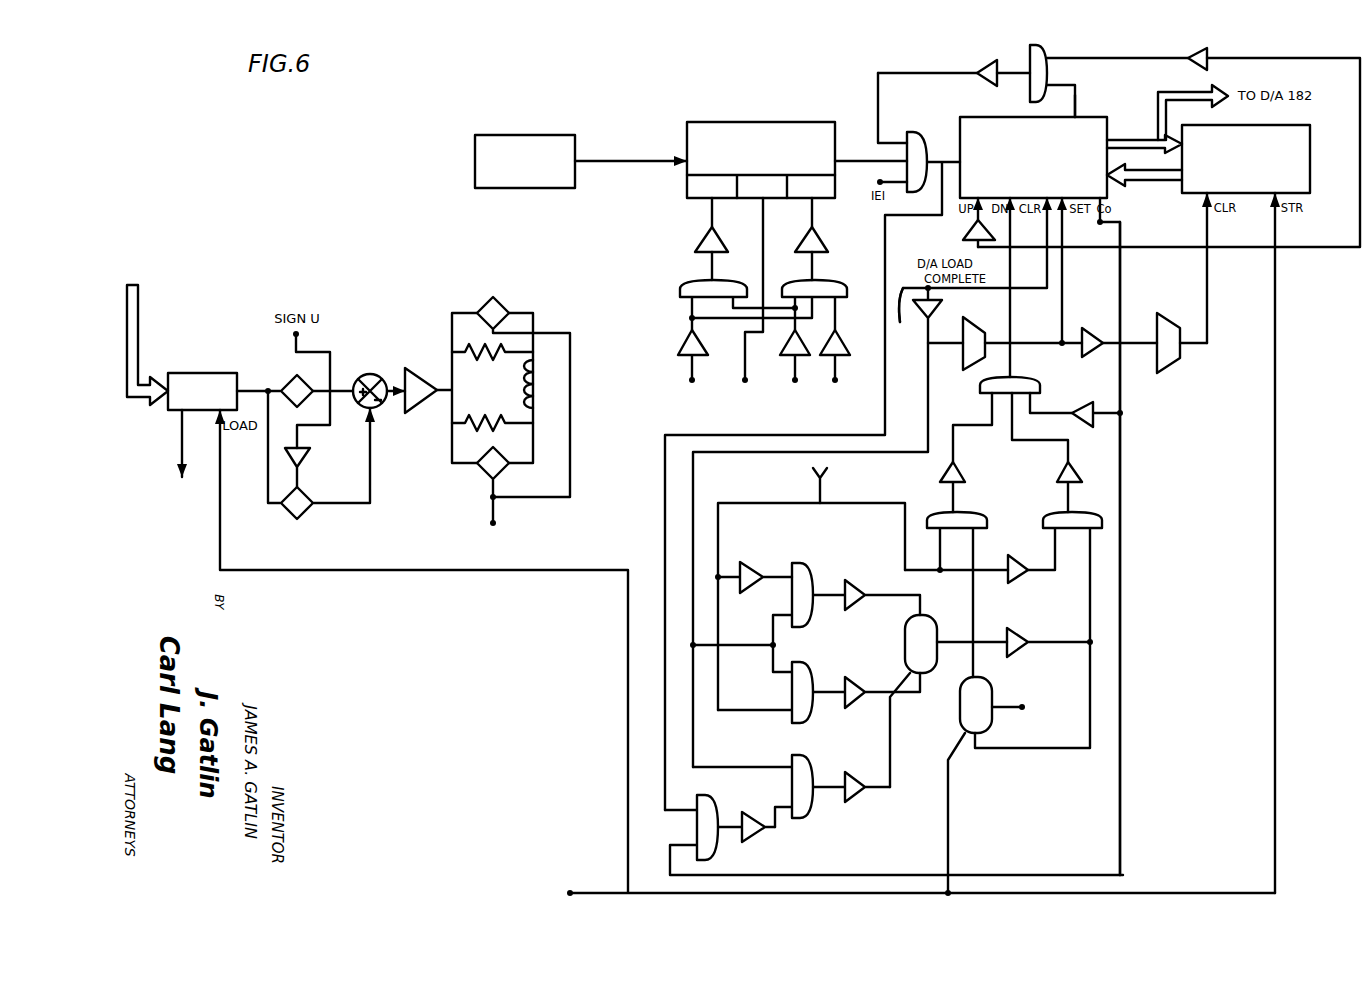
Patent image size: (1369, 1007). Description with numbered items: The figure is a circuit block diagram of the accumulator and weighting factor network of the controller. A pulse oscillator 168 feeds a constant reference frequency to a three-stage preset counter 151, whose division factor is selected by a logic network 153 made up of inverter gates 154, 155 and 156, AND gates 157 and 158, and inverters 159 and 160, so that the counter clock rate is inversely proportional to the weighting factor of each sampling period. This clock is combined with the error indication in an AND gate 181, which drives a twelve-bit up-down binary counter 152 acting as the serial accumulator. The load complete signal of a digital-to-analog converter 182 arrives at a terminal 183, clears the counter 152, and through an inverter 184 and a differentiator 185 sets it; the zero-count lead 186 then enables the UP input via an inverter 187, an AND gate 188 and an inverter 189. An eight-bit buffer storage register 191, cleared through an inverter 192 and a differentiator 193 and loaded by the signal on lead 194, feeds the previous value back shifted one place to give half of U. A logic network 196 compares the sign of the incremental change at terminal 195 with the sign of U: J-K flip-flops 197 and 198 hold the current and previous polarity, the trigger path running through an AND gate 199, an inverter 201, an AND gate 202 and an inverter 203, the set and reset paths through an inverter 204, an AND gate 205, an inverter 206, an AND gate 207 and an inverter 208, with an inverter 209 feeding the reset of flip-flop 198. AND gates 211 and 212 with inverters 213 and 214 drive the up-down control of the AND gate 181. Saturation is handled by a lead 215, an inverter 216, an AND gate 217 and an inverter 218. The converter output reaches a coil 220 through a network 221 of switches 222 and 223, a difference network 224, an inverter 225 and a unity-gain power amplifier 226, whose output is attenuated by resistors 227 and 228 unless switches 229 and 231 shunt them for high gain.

The three-stage preset counter 151 is at (712, 122).
The 12-bit up-down binary counter 152 is at (975, 117).
The logic network 153 is at (754, 310).
The inverter gate 154 is at (678, 342).
The inverter gate 155 is at (786, 352).
The inverter 156 is at (842, 356).
The AND gate 157 is at (680, 294).
The AND gate 158 is at (847, 285).
The inverter 159 is at (701, 240).
The inverter 160 is at (826, 240).
The pulse oscillator 168 is at (532, 135).
The AND gate 181 is at (920, 136).
The digital-to-analog converter 182 is at (212, 373).
The terminal 183 is at (905, 317).
The inverter 184 is at (945, 310).
The differentiator 185 is at (963, 365).
The lead 186 is at (1123, 292).
The inverter 187 is at (1085, 402).
The AND gate 188 is at (1025, 378).
The inverter 189 is at (963, 236).
The 8-bit buffer storage register 191 is at (1310, 155).
The inverter 192 is at (1090, 328).
The differentiator 193 is at (1170, 365).
The lead 194 is at (600, 897).
The terminal 195 is at (820, 493).
The logic network 196 is at (922, 505).
The J-K flip-flop 197 is at (905, 640).
The J-K flip-flop 198 is at (960, 708).
The AND gate 199 is at (714, 854).
The inverter 201 is at (760, 838).
The AND gate 202 is at (820, 812).
The inverter 203 is at (866, 798).
The inverter 204 is at (745, 562).
The AND gate 205 is at (802, 563).
The buffer 206 is at (860, 588).
The AND gate 207 is at (805, 663).
The inverter 208 is at (858, 708).
The inverter 209 is at (1022, 638).
The AND gate 211 is at (975, 516).
The AND gate 212 is at (1080, 516).
The inverter 213 is at (965, 472).
The inverter 214 is at (1057, 475).
The output lead 215 is at (1075, 100).
The inverter 216 is at (1210, 52).
The AND gate 217 is at (1031, 55).
The inverter 218 is at (985, 62).
The coil 220 is at (540, 400).
The network 221 is at (383, 507).
The switch 222 is at (286, 380).
The switch 223 is at (312, 514).
The difference network 224 is at (372, 374).
The inverter 225 is at (311, 458).
The power amplifier 226 is at (425, 413).
The resistor 227 is at (492, 363).
The resistor 228 is at (492, 410).
The switch 229 is at (485, 482).
The switch 231 is at (505, 303).